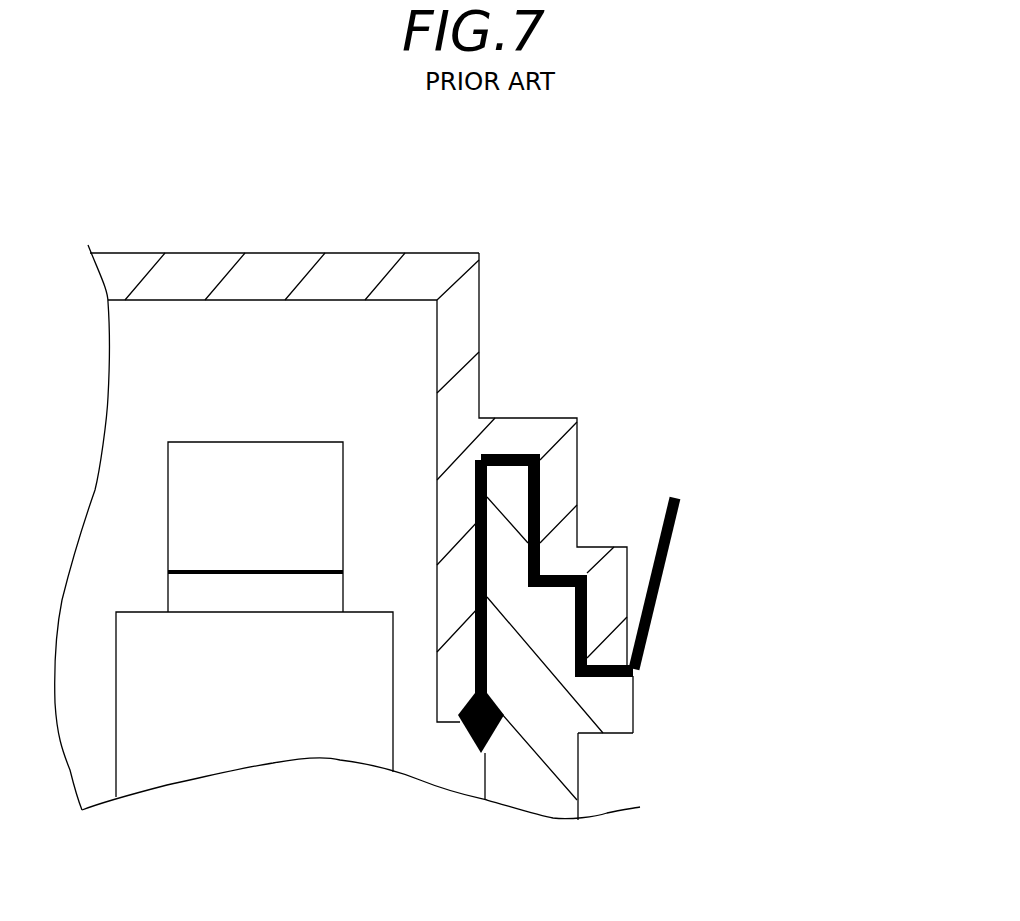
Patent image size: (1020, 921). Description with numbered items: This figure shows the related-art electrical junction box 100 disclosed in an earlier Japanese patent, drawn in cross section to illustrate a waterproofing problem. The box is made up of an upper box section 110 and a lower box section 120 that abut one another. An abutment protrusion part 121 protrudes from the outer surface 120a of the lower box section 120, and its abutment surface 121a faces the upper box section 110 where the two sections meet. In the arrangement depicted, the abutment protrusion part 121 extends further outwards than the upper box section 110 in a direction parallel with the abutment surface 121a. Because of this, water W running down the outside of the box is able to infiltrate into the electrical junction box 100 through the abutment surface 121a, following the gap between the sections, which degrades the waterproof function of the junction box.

The electrical junction box 100 is at (357, 227).
The upper box section 110 is at (505, 353).
The lower box section 120 is at (572, 773).
The abutment protrusion part 121 is at (617, 707).
The abutment surface 121a is at (635, 662).
The outer surface 120a is at (578, 745).
The water W is at (680, 522).